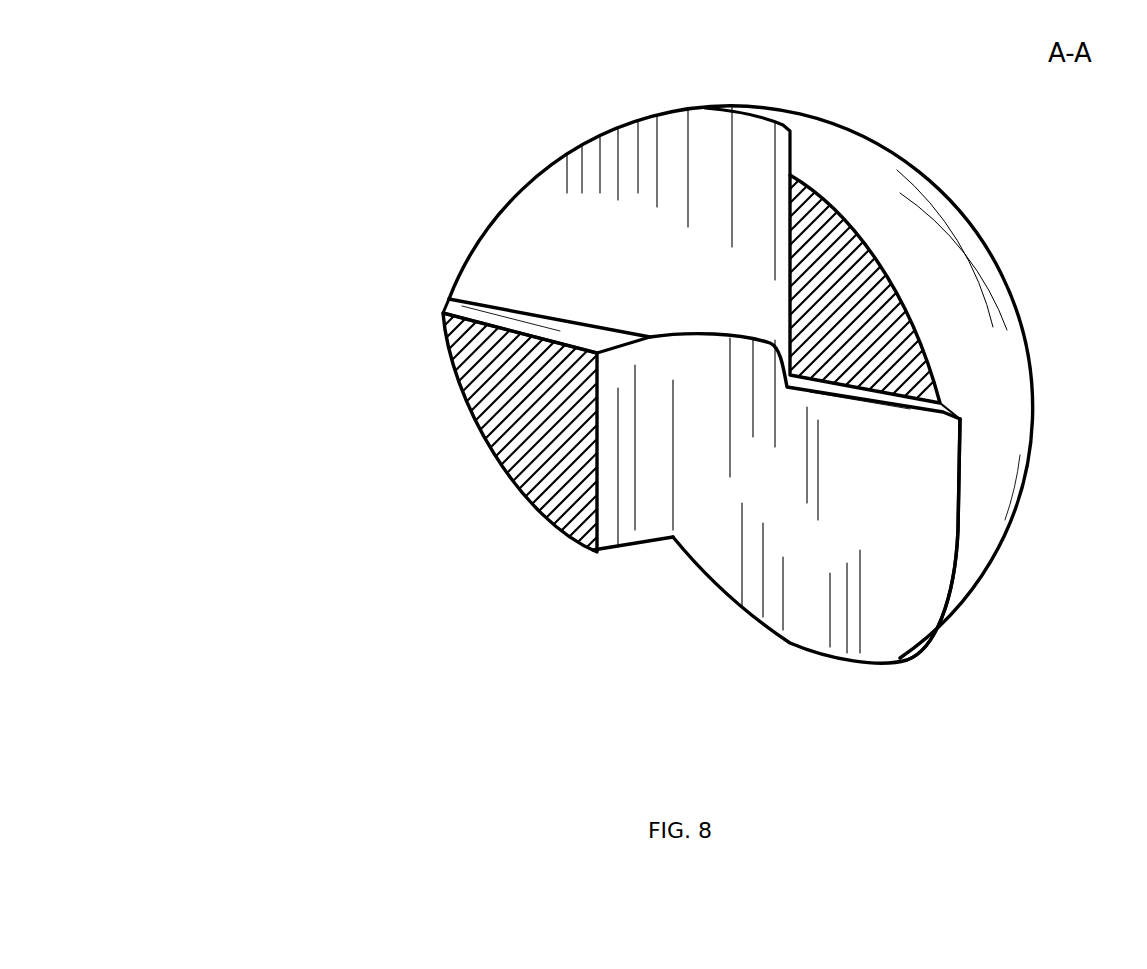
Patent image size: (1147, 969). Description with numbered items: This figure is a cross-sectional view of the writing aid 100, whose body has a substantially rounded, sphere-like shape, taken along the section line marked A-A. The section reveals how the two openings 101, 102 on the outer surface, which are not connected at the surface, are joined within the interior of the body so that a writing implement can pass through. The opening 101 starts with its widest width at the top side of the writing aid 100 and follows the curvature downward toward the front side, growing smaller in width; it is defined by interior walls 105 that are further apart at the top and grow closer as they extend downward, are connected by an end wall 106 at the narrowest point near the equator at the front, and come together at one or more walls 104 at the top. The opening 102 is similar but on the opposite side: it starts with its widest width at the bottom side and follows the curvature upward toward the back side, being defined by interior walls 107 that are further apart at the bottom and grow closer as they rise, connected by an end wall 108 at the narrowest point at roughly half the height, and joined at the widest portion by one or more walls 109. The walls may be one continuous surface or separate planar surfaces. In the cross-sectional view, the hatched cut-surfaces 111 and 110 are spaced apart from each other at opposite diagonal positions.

The writing aid 100 is at (1049, 230).
The opening 101 is at (665, 146).
The opening 102 is at (803, 616).
The walls 104 is at (788, 152).
The interior walls 105 is at (607, 227).
The end wall 106 is at (483, 307).
The interior walls 107 is at (900, 567).
The end wall 108 is at (947, 410).
The walls 109 is at (638, 517).
The cut-surface 110 is at (533, 443).
The cut-surface 111 is at (847, 302).